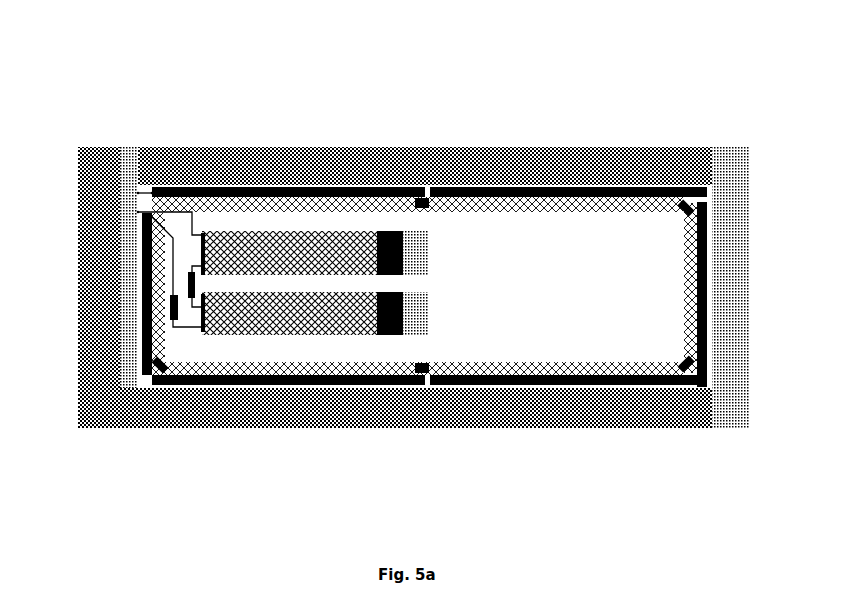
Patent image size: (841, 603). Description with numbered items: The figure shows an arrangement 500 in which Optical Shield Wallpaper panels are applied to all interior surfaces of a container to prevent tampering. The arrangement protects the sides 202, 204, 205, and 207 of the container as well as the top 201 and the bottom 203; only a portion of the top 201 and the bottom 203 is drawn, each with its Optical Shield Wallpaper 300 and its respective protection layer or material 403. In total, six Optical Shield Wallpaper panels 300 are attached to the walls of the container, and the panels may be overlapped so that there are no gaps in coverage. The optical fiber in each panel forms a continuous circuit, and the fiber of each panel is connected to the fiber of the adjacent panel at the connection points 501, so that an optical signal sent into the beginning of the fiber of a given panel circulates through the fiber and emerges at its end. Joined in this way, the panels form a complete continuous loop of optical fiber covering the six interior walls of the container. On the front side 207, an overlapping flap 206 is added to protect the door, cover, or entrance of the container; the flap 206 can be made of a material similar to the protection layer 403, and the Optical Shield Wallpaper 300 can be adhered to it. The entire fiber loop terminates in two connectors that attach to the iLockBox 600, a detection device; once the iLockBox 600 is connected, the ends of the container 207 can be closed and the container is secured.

The arrangement 500 is at (416, 56).
The side 202 is at (218, 140).
The side 204 is at (749, 178).
The side 205 is at (541, 432).
The front side 207 is at (68, 165).
The iLockBox 600 is at (127, 218).
The overlapping flap 206 is at (157, 272).
The Optical Shield Wallpaper panel 300 is at (477, 187).
The top 201 is at (433, 236).
The bottom 203 is at (433, 296).
The protection layer 403 is at (258, 213).
The connection point 501 is at (425, 213).